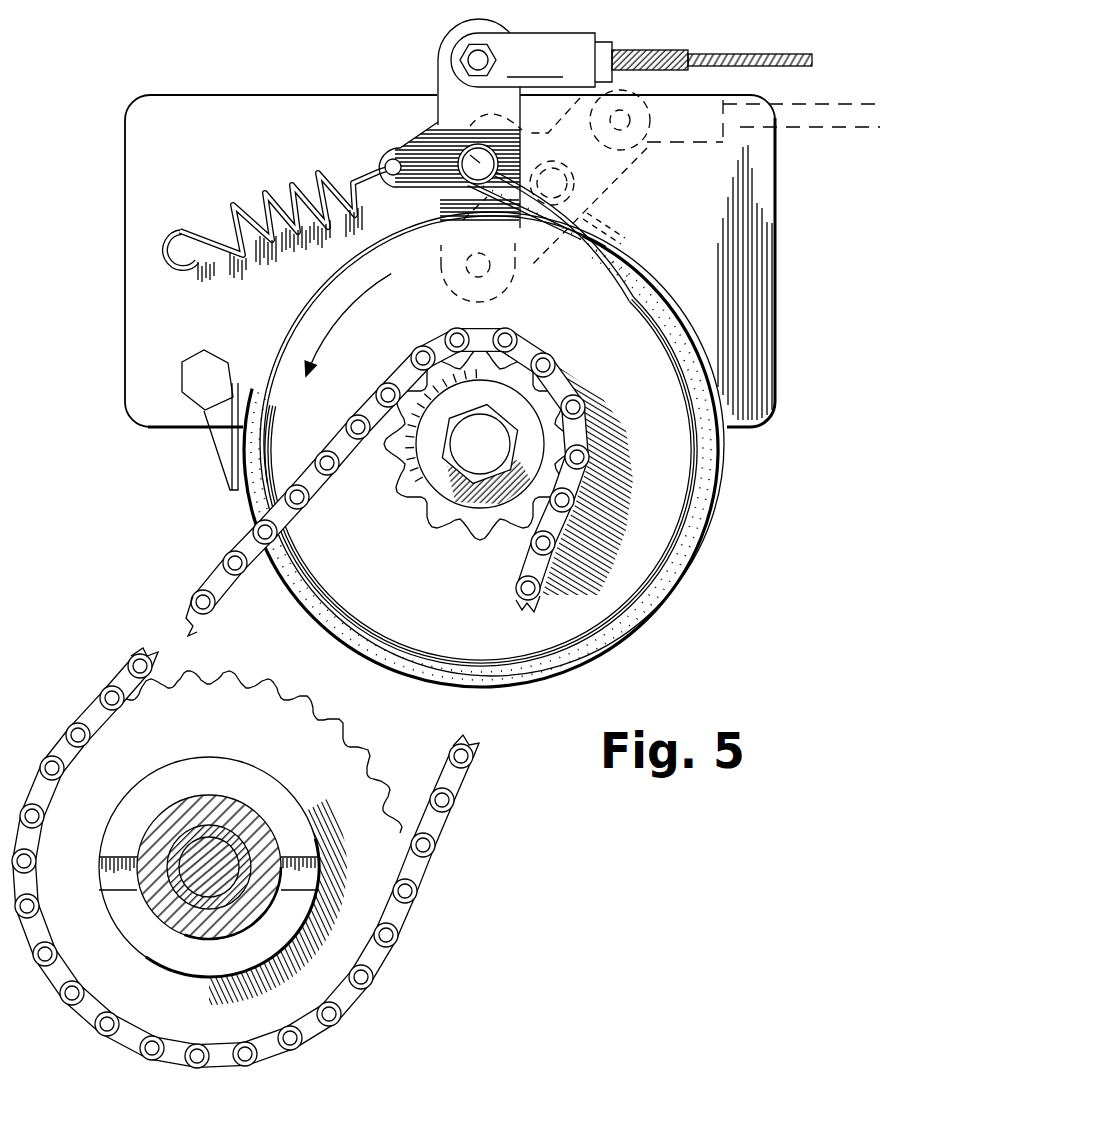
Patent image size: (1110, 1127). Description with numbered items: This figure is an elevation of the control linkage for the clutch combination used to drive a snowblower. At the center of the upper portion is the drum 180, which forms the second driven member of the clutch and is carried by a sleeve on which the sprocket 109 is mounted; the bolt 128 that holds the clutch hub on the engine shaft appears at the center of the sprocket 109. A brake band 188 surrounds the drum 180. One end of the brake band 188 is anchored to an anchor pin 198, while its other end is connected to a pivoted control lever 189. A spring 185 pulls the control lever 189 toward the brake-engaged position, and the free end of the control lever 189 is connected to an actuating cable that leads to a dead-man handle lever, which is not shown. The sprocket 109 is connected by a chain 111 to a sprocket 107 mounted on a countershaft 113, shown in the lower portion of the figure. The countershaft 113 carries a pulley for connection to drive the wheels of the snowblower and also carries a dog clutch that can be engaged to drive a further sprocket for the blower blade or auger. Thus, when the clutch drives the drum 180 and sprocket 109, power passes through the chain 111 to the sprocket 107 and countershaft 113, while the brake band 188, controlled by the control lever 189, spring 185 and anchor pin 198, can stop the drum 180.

The control lever 189 is at (445, 57).
The spring 185 is at (288, 185).
The anchor pin 198 is at (212, 378).
The bolt 128 is at (465, 454).
The sprocket 109 is at (398, 502).
The drum 180 is at (685, 457).
The brake band 188 is at (708, 522).
The sprocket 107 is at (348, 744).
The countershaft 113 is at (218, 842).
The chain 111 is at (461, 778).